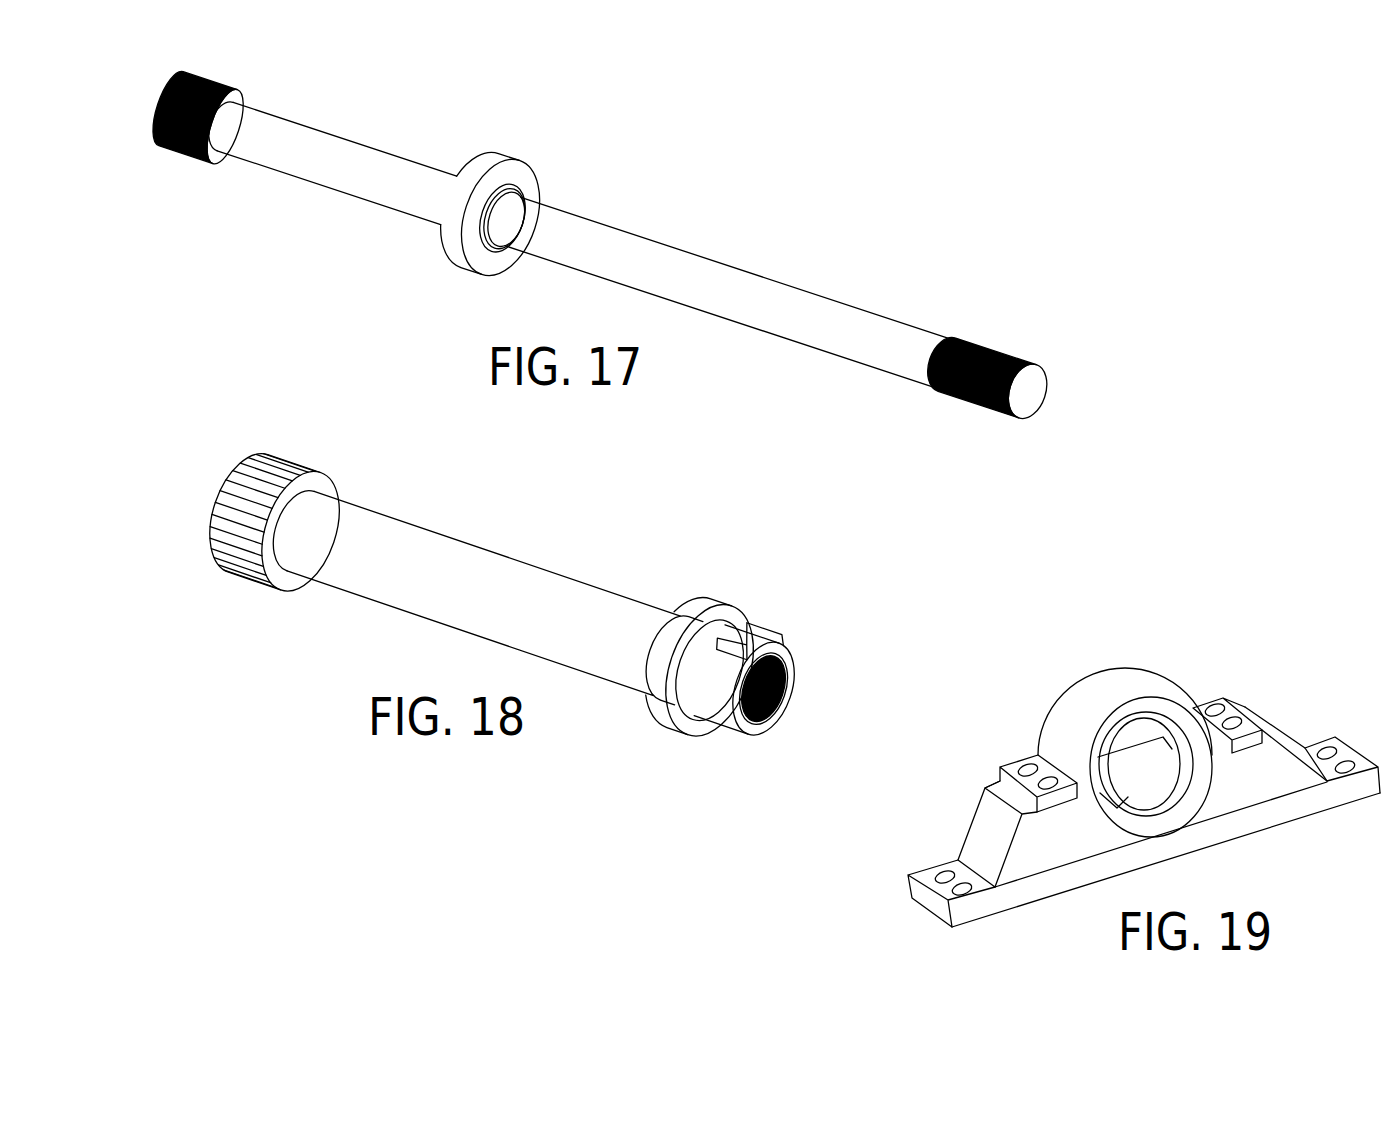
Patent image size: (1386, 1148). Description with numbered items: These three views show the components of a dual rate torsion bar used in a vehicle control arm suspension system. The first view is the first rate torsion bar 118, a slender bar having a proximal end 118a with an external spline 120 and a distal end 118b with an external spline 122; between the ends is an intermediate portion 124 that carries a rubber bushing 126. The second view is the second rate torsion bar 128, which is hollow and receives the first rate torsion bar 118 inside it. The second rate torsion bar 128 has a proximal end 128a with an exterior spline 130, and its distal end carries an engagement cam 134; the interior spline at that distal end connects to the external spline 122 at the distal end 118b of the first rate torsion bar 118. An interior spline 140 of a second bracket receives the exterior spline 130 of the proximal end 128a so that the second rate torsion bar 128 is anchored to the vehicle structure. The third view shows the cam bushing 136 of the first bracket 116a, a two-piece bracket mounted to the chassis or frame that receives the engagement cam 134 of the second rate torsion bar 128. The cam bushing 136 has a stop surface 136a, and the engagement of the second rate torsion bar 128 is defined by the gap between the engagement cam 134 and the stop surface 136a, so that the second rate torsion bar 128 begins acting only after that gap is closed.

In FIG. 17, the first rate torsion bar 118 is at (797, 327).
In FIG. 17, the proximal end 118a is at (232, 103).
In FIG. 17, the distal end 118b is at (1030, 398).
In FIG. 17, the external spline 120 is at (190, 82).
In FIG. 17, the external spline 122 is at (976, 416).
In FIG. 17, the intermediate portion 124 is at (515, 195).
In FIG. 17, the rubber bushing 126 is at (462, 262).
In FIG. 18, the second rate torsion bar 128 is at (486, 563).
In FIG. 18, the proximal end 128a is at (322, 482).
In FIG. 18, the exterior spline 130 is at (240, 577).
In FIG. 18, the engagement cam 134 is at (748, 633).
In FIG. 18, the interior spline 140 is at (683, 722).
In FIG. 19, the cam bushing 136 is at (1142, 685).
In FIG. 19, the stop surface 136a is at (1135, 775).
In FIG. 19, the first bracket 116a is at (985, 840).